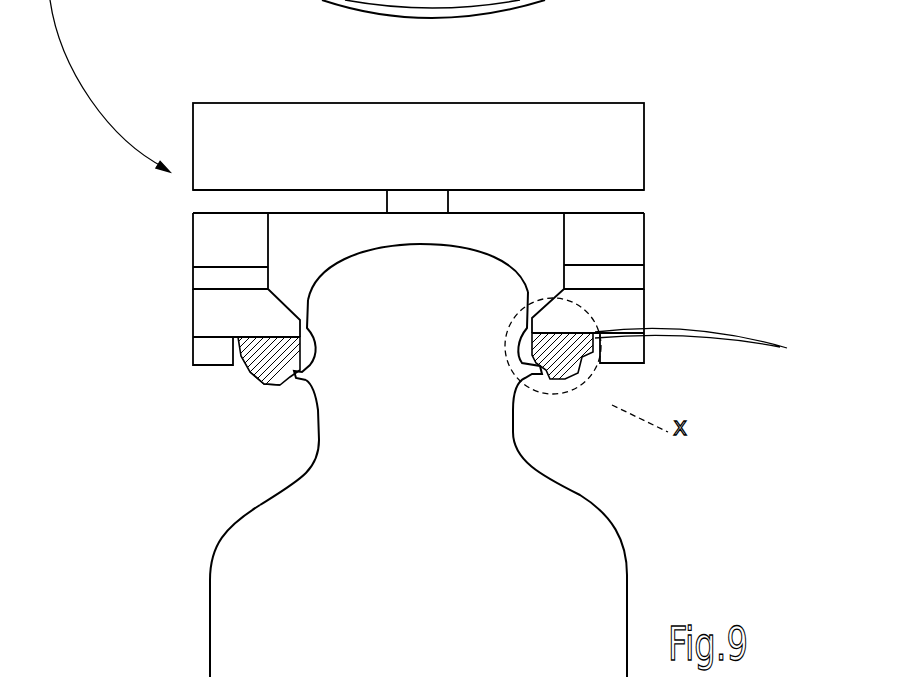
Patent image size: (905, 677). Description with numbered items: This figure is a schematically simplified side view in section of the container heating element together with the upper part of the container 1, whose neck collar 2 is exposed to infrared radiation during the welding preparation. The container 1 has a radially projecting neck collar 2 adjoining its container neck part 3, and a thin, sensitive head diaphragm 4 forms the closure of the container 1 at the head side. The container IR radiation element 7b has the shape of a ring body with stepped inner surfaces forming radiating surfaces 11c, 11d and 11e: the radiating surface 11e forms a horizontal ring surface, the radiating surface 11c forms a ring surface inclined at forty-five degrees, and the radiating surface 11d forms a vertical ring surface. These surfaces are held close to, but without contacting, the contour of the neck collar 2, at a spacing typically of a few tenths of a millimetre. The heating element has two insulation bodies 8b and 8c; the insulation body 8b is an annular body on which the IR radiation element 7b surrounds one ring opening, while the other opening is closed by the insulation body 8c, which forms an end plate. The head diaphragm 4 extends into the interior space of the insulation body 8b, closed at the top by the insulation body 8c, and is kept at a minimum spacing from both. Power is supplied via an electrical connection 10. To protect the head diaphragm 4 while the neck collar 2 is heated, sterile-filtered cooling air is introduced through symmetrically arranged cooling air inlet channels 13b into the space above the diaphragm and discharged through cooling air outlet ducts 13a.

The container 1 is at (593, 533).
The neck collar 2 is at (323, 400).
The container neck part 3 is at (300, 417).
The head diaphragm 4 is at (375, 250).
The container IR radiation element 7b is at (260, 380).
The insulation body 8b is at (242, 320).
The insulation body 8c is at (632, 143).
The electrical connection 10 is at (722, 332).
The radiating surface 11c is at (297, 373).
The radiating surface 11d is at (262, 383).
The radiating surface 11e is at (515, 383).
The cooling air outlet duct 13a is at (427, 198).
The cooling air inlet channel 13b is at (213, 277).